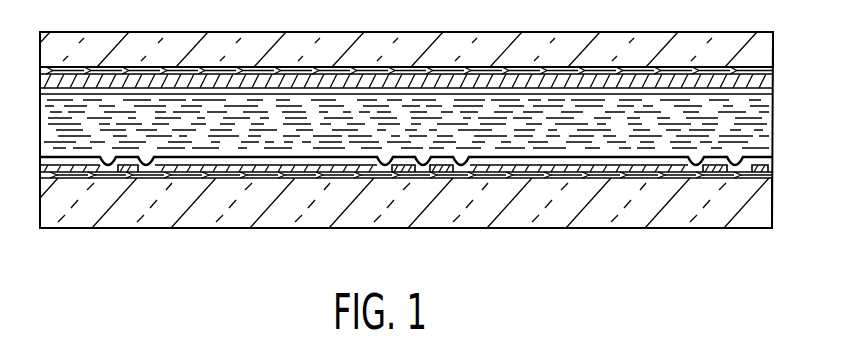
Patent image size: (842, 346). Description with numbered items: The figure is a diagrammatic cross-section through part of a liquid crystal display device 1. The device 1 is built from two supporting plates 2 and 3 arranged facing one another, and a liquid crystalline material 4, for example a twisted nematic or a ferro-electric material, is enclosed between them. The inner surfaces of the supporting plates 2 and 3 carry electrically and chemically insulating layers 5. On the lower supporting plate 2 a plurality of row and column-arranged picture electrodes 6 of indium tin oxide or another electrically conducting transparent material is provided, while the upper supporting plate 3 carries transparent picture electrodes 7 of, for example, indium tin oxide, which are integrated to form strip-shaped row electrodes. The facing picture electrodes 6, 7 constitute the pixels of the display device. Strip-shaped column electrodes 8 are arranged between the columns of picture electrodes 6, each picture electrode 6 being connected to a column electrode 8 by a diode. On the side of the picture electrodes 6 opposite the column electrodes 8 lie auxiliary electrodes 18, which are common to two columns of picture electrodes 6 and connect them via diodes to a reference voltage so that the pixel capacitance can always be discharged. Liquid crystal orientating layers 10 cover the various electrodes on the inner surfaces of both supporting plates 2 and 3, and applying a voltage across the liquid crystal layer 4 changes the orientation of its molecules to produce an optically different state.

The liquid crystal display cell 1 is at (98, 240).
The supporting plate 2 is at (432, 218).
The supporting plate 3 is at (375, 45).
The liquid crystalline material 4 is at (277, 148).
The electrically and chemically insulating layer 5 is at (301, 78).
The picture electrode 6 is at (245, 166).
The transparent picture electrode 7 is at (197, 72).
The column electrode 8 is at (403, 167).
The liquid crystal orientating layer 10 is at (497, 93).
The auxiliary electrode 18 is at (131, 167).